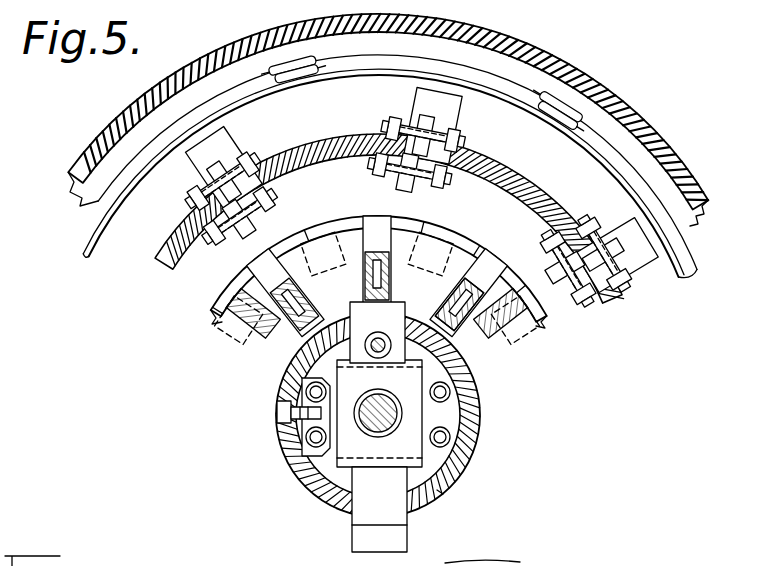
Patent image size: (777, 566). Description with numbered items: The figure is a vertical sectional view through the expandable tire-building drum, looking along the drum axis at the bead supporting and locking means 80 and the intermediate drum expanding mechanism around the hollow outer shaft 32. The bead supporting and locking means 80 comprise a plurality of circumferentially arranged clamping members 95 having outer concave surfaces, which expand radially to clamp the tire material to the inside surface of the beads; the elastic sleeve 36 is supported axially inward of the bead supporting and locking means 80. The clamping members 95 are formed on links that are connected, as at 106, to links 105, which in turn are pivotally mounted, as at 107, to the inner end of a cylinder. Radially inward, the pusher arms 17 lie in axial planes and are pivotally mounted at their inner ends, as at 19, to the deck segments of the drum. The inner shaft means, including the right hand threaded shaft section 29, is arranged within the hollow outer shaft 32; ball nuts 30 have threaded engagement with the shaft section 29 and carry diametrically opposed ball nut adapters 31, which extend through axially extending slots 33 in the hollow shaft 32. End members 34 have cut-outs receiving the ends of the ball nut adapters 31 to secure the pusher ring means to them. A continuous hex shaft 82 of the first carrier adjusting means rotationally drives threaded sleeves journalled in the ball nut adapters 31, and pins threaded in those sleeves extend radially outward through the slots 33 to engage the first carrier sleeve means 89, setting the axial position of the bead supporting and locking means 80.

The elastic sleeve 36 is at (638, 116).
The bead supporting and locking means 80 is at (118, 234).
The clamping members 95 is at (345, 92).
The links 105 is at (413, 197).
The connection of links to links carrying clamping members 106 is at (196, 198).
The pivotal mounting of links to cylinder 107 is at (398, 168).
The pivot mounting of pusher arms 19 is at (531, 208).
The pusher arms 17 is at (478, 323).
The hollow outer shaft 32 is at (468, 420).
The ball nuts 30 is at (412, 447).
The right hand threaded shaft section 29 is at (362, 440).
The ball nut adapters 31 is at (293, 359).
The hex shaft 82 is at (396, 350).
The slots 33 is at (352, 515).
The end members 34 is at (443, 494).
The first carrier sleeve means 89 is at (503, 558).